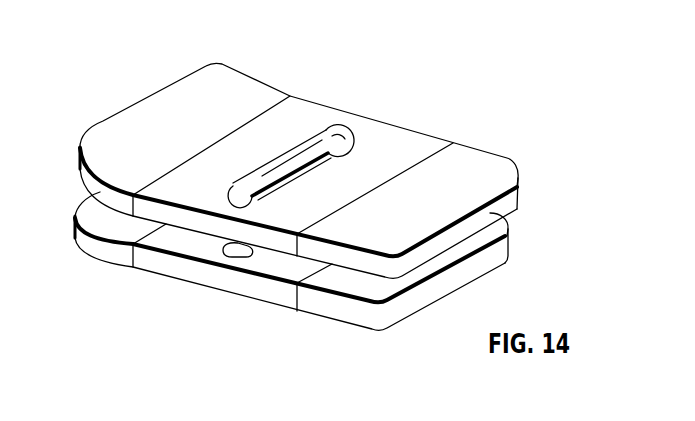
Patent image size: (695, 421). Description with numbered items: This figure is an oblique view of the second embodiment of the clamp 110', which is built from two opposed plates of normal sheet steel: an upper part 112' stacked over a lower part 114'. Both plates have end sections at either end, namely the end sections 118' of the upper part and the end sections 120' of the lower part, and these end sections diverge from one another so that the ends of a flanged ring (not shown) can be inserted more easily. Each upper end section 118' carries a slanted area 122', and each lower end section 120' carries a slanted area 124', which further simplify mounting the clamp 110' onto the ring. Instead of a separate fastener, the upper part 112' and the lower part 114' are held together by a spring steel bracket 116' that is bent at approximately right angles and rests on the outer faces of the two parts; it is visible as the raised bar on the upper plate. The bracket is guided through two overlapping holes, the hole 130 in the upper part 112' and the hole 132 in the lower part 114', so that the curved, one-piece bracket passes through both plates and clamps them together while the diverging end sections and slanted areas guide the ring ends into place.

The clamp 110' is at (299, 155).
The upper part 112' is at (293, 165).
The lower part 114' is at (232, 295).
The spring steel bracket 116' is at (282, 126).
The end sections of the upper part 118' is at (322, 151).
The end sections of the lower part 120' is at (259, 297).
The slanted area of the upper end section 122' is at (266, 187).
The slanted area of the lower end section 124' is at (328, 290).
The hole in the upper part 130 is at (357, 138).
The hole in the lower part 132 is at (223, 252).